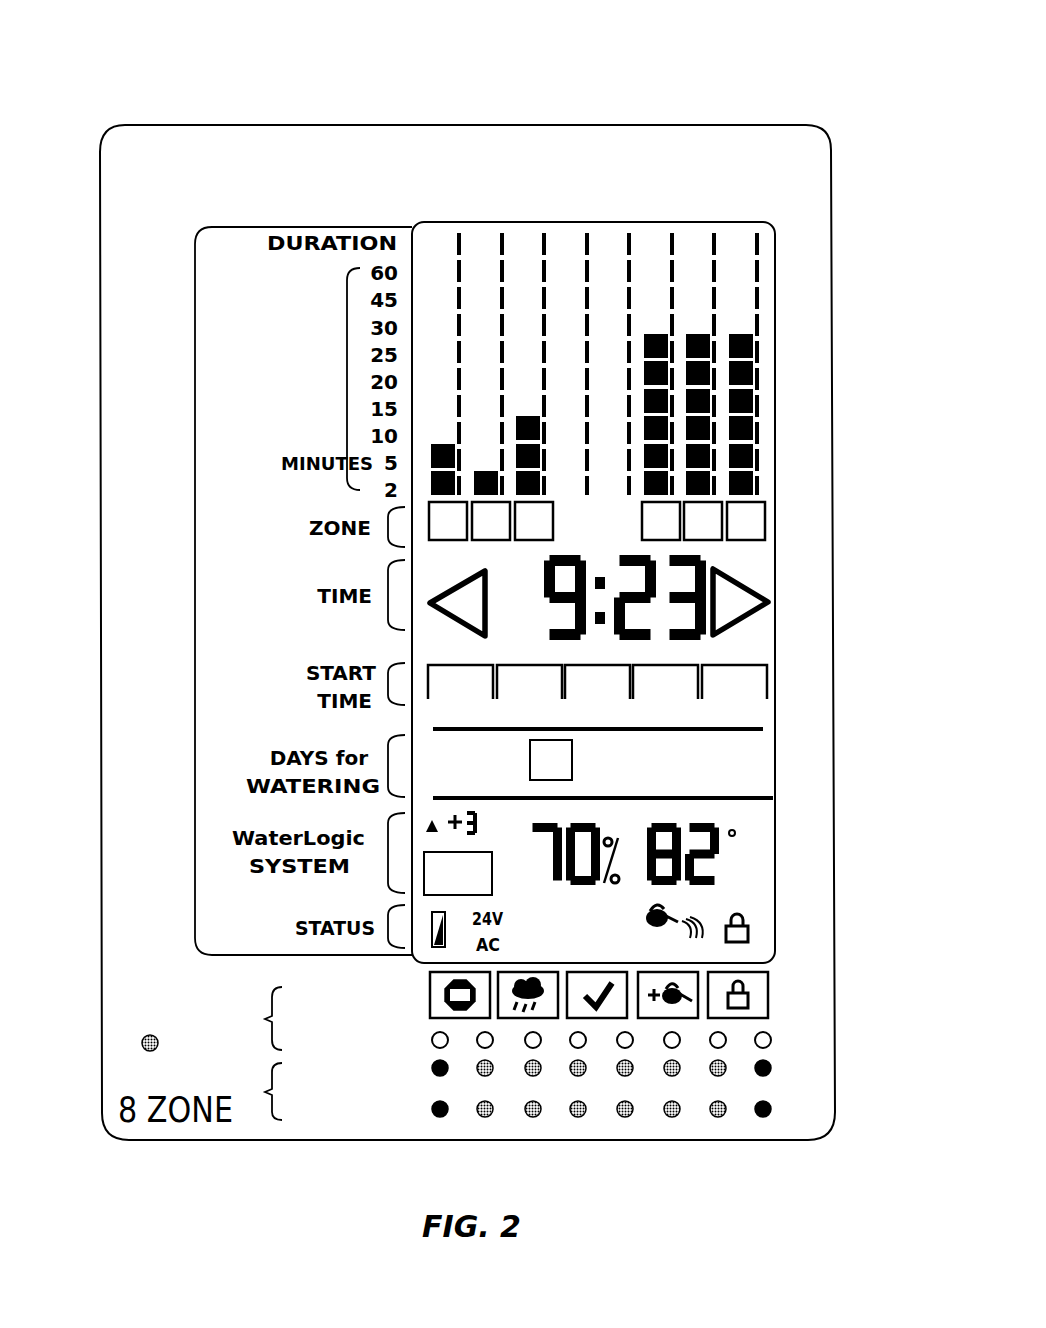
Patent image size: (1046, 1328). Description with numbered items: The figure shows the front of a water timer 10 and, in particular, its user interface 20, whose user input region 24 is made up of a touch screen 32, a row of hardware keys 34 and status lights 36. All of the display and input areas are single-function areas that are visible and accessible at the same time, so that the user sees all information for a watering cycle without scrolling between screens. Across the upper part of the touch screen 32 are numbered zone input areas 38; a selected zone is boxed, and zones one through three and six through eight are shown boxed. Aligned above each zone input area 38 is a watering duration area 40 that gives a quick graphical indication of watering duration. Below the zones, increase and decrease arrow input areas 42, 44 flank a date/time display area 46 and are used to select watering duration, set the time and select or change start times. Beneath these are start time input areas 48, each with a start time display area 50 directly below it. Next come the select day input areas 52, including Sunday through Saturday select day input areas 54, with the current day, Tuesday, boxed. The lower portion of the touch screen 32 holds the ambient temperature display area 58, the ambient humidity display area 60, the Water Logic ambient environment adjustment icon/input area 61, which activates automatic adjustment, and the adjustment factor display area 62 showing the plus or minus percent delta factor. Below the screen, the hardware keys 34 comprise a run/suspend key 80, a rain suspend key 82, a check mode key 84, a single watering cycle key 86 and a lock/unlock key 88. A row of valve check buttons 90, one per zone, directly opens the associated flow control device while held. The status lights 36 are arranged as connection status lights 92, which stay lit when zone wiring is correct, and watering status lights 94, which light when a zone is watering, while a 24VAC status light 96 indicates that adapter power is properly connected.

The water timer 10 is at (812, 48).
The user interface 20 is at (687, 110).
The user input region 24 is at (790, 286).
The touch screen 32 is at (296, 600).
The hardware keys 34 is at (265, 1019).
The status lights 36 is at (265, 1092).
The zone input areas 38 is at (712, 512).
The watering duration area 40 is at (693, 283).
The increase arrow input area 42 is at (730, 598).
The decrease arrow input area 44 is at (466, 578).
The date/time display area 46 is at (700, 560).
The start time input areas 48 is at (748, 678).
The start time display area 50 is at (695, 712).
The select day input areas 52 is at (232, 772).
The Sunday through Saturday select day input areas 54 is at (762, 757).
The ambient temperature display area 58 is at (722, 857).
The ambient humidity display area 60 is at (577, 890).
The ambient environment adjustment icon/input area 61 is at (493, 886).
The adjustment factor display area 62 is at (470, 808).
The run/suspend key 80 is at (436, 990).
The rain suspend key 82 is at (555, 975).
The check mode key 84 is at (613, 975).
The single watering cycle key 86 is at (670, 975).
The lock/unlock key 88 is at (760, 1000).
The valve check buttons 90 is at (772, 1040).
The connection status lights 92 is at (772, 1067).
The watering status lights 94 is at (772, 1108).
The 24VAC status light 96 is at (143, 1040).